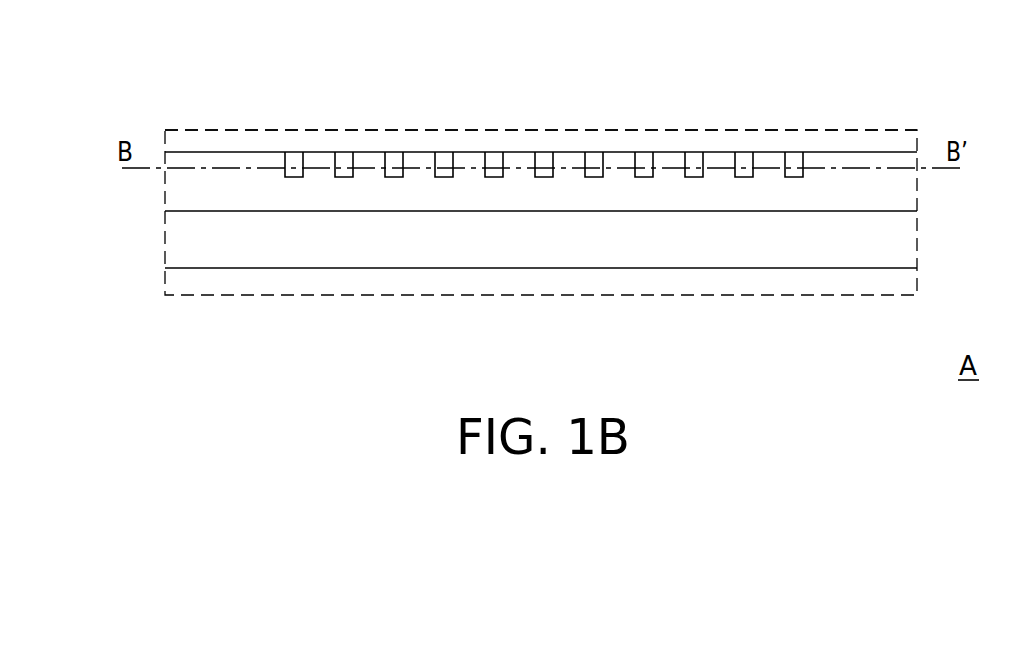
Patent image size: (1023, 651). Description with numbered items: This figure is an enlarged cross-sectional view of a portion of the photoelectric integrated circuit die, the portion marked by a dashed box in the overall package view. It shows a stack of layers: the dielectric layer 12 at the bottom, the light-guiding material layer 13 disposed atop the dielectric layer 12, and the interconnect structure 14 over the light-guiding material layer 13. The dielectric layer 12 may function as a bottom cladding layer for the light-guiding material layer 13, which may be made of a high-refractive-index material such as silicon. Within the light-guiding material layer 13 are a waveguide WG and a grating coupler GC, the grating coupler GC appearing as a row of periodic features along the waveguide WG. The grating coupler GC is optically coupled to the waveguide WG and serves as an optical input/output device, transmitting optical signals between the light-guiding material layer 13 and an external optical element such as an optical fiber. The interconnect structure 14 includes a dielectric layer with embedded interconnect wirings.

The dielectric layer 12 is at (902, 288).
The light-guiding material layer 13 is at (902, 242).
The interconnect structure 14 is at (882, 140).
The waveguide WG is at (245, 160).
The grating coupler GC is at (318, 177).